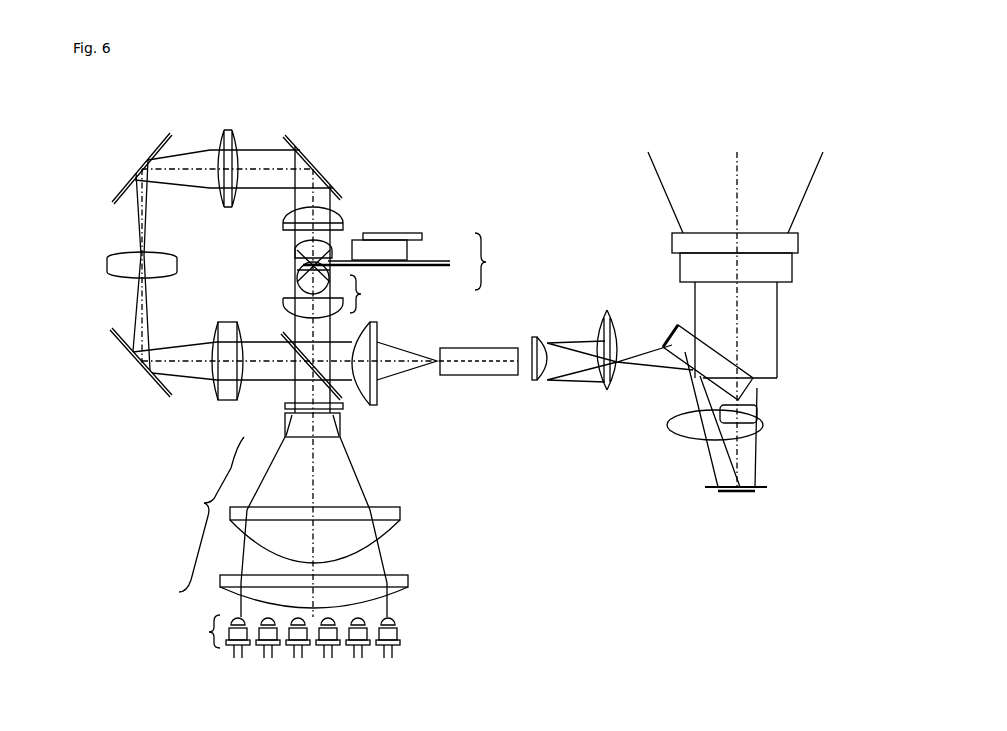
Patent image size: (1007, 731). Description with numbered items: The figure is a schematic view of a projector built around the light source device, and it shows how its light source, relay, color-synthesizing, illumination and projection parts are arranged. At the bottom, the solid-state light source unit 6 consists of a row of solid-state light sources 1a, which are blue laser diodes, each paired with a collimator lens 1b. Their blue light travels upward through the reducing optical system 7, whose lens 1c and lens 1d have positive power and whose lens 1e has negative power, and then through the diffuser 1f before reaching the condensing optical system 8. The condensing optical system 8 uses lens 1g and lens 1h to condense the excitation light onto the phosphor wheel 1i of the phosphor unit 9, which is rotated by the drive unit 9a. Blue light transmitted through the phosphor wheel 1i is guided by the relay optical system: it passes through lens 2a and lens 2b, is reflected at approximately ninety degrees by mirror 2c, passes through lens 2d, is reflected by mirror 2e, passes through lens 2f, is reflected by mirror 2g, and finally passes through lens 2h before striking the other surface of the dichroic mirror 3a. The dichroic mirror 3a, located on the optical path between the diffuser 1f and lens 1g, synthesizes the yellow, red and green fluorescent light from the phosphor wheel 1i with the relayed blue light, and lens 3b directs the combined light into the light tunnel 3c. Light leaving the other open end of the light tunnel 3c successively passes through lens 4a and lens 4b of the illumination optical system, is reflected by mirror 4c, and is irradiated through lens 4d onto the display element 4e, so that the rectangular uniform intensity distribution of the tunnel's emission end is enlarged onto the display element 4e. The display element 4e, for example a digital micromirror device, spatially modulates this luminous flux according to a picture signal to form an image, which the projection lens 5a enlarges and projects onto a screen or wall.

The solid-state light source 1a is at (397, 635).
The collimator lens 1b is at (395, 620).
The lens 1c is at (408, 580).
The lens 1d is at (400, 512).
The lens 1e is at (343, 440).
The diffuser 1f is at (285, 405).
The lens 1g is at (283, 303).
The lens 1h is at (295, 268).
The phosphor wheel 1i is at (440, 268).
The lens 2a is at (295, 250).
The lens 2b is at (343, 227).
The mirror 2c is at (342, 198).
The lens 2d is at (232, 128).
The mirror 2e is at (110, 197).
The lens 2f is at (107, 265).
The mirror 2g is at (165, 392).
The lens 2h is at (218, 330).
The dichroic mirror 3a is at (345, 403).
The lens 3b is at (377, 323).
The light tunnel 3c is at (477, 375).
The lens 4a is at (532, 380).
The lens 4b is at (602, 390).
The mirror 4c is at (678, 333).
The lens 4d is at (668, 428).
The display element 4e is at (712, 492).
The projection lens 5a is at (777, 352).
The solid-state light source unit 6 is at (210, 631).
The reducing optical system 7 is at (211, 514).
The condensing optical system 8 is at (361, 294).
The phosphor unit 9 is at (487, 261).
The drive unit 9a is at (407, 252).